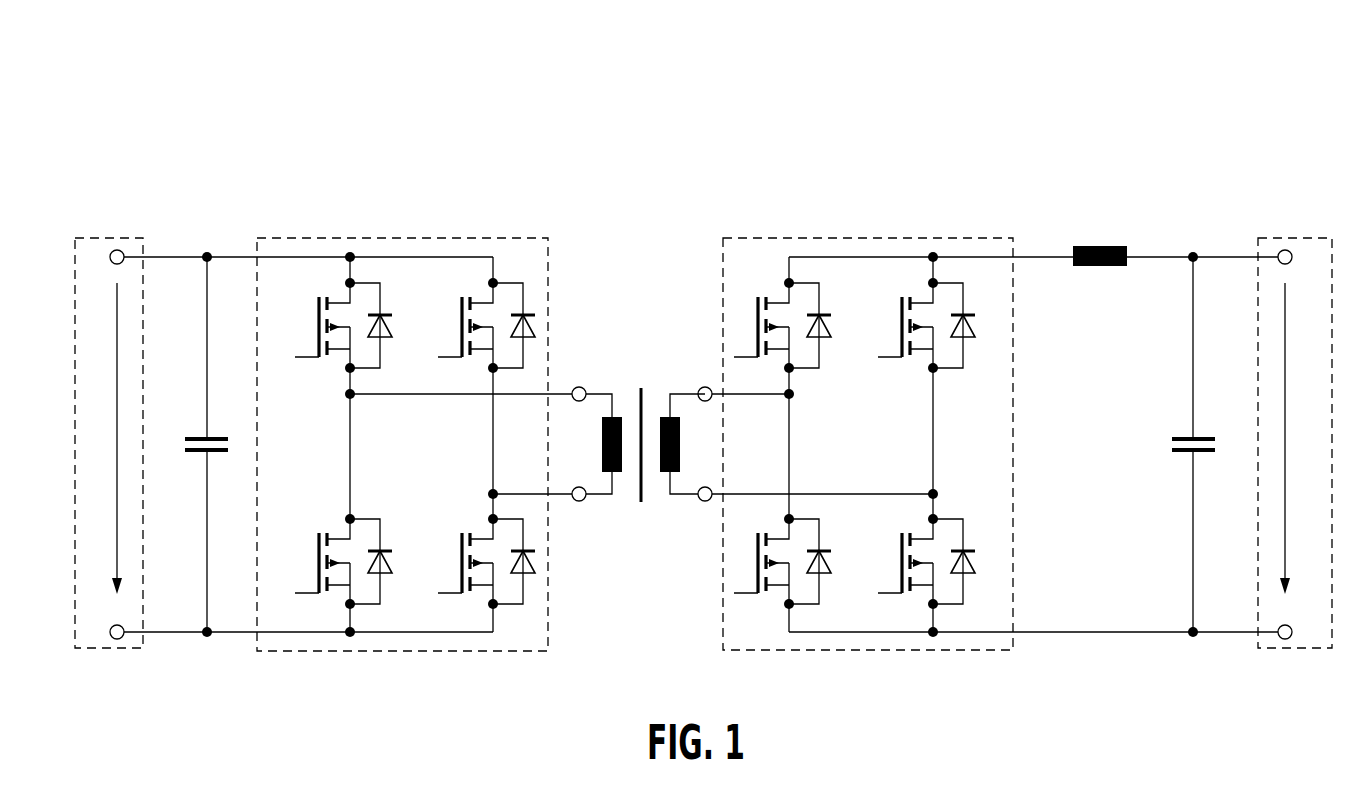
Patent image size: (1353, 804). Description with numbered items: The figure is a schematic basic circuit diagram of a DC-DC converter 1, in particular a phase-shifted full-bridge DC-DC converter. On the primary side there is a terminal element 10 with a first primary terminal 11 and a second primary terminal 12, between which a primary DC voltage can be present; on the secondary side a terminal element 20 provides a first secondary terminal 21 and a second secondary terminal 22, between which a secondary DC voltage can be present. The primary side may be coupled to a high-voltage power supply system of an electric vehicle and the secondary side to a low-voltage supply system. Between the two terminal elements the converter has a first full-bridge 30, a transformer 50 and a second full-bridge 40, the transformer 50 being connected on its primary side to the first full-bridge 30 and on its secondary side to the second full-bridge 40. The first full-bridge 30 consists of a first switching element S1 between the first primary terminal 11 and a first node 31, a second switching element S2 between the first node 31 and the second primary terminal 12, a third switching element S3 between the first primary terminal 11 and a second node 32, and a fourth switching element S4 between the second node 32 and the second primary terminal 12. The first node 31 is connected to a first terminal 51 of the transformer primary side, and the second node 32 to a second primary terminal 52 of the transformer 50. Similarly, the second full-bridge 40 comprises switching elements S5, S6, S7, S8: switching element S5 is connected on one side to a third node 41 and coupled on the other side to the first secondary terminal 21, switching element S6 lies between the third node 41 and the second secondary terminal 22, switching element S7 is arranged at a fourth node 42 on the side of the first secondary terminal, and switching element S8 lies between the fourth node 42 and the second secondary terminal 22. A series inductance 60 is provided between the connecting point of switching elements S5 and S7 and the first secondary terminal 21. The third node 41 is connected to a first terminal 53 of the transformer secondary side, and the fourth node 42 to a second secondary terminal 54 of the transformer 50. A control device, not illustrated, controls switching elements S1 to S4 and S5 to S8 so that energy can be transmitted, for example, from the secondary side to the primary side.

The DC-DC converter 1 is at (202, 153).
The terminal element 10 is at (92, 258).
The first primary terminal 11 is at (120, 248).
The second primary terminal 12 is at (117, 640).
The terminal element 20 is at (1313, 256).
The first secondary terminal 21 is at (1285, 249).
The second secondary terminal 22 is at (1285, 640).
The first full-bridge 30 is at (520, 258).
The first node 31 is at (347, 398).
The second node 32 is at (489, 492).
The second full-bridge 40 is at (770, 258).
The third node 41 is at (787, 398).
The fourth node 42 is at (929, 492).
The transformer 50 is at (641, 361).
The first terminal of the primary side of the transformer 51 is at (579, 387).
The second primary terminal of the transformer 52 is at (579, 501).
The first terminal of the secondary side of the transformer 53 is at (705, 387).
The second secondary terminal of the transformer 54 is at (705, 501).
The series inductance 60 is at (1097, 246).
The first switching element S1 is at (316, 330).
The second switching element S2 is at (316, 566).
The third switching element S3 is at (459, 330).
The fourth switching element S4 is at (459, 566).
The switching element S5 is at (755, 330).
The switching element S6 is at (755, 566).
The switching element S7 is at (899, 330).
The switching element S8 is at (899, 566).